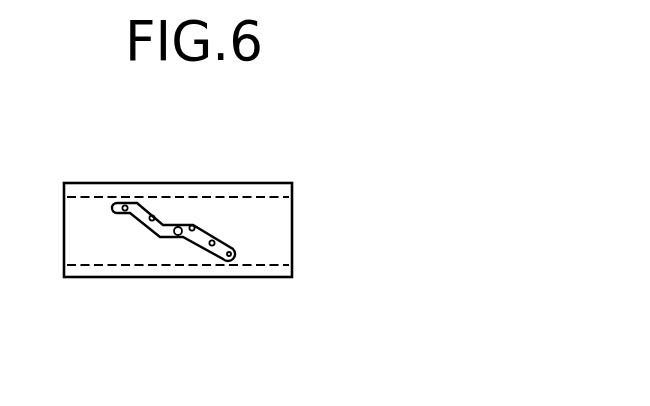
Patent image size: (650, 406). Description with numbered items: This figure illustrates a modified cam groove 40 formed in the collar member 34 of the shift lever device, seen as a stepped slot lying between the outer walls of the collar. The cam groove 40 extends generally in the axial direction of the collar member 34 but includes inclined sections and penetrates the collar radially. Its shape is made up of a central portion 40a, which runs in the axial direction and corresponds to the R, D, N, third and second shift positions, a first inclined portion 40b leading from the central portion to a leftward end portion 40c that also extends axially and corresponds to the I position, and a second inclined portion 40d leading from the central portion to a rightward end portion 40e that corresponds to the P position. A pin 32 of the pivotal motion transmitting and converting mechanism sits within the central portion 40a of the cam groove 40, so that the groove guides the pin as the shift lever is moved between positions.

The collar member 34 is at (282, 226).
The cam groove 40 is at (139, 234).
The central portion 40a is at (194, 225).
The first inclined portion 40b is at (154, 215).
The leftward end portion 40c is at (126, 204).
The second inclined portion 40d is at (213, 240).
The rightward end portion 40e is at (233, 258).
The pin 32 is at (176, 236).